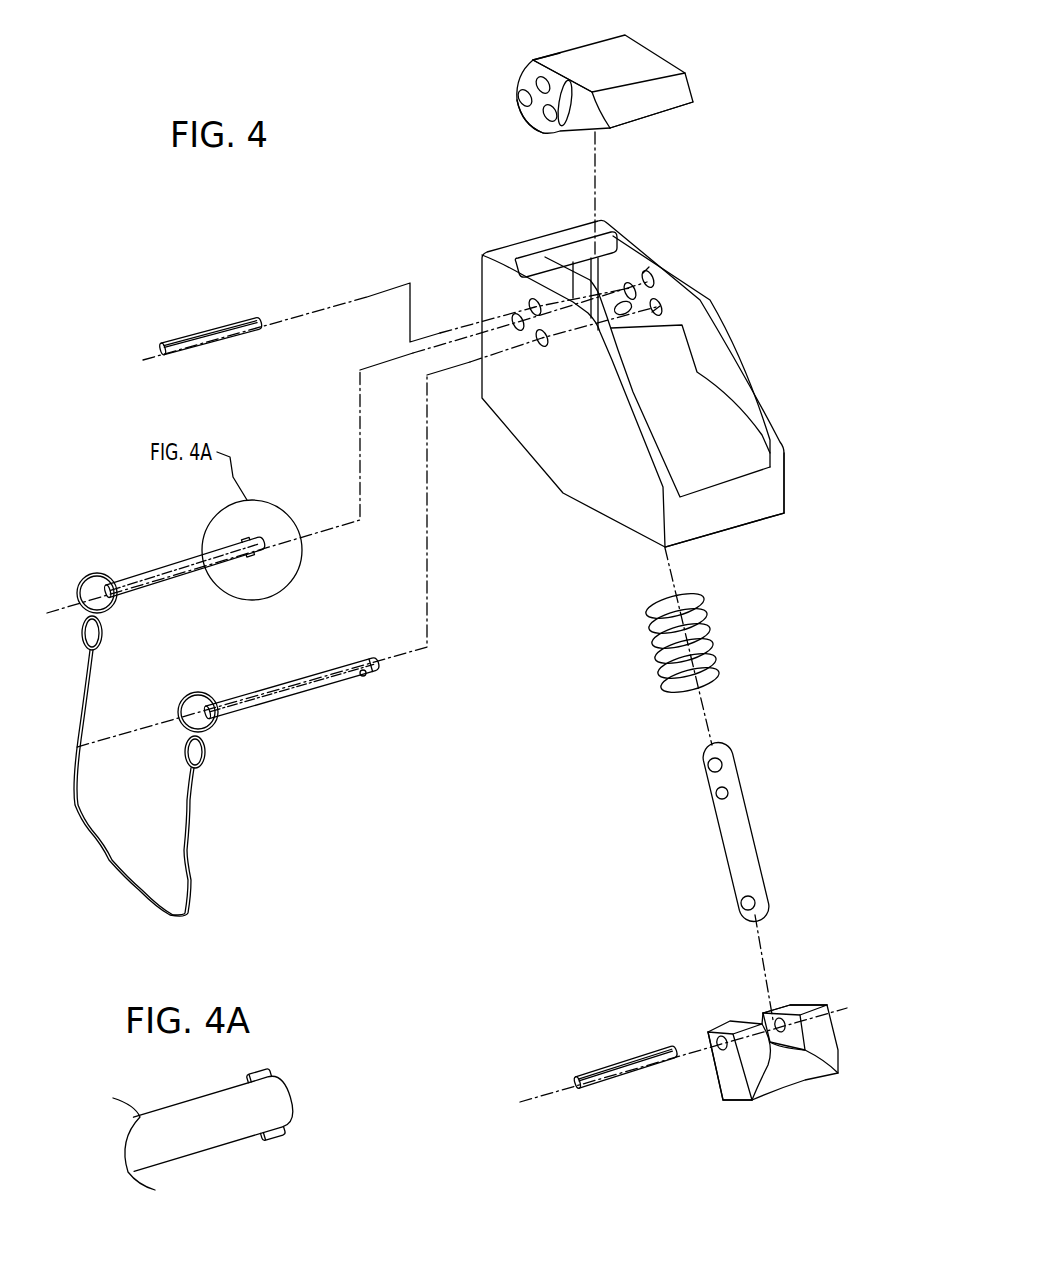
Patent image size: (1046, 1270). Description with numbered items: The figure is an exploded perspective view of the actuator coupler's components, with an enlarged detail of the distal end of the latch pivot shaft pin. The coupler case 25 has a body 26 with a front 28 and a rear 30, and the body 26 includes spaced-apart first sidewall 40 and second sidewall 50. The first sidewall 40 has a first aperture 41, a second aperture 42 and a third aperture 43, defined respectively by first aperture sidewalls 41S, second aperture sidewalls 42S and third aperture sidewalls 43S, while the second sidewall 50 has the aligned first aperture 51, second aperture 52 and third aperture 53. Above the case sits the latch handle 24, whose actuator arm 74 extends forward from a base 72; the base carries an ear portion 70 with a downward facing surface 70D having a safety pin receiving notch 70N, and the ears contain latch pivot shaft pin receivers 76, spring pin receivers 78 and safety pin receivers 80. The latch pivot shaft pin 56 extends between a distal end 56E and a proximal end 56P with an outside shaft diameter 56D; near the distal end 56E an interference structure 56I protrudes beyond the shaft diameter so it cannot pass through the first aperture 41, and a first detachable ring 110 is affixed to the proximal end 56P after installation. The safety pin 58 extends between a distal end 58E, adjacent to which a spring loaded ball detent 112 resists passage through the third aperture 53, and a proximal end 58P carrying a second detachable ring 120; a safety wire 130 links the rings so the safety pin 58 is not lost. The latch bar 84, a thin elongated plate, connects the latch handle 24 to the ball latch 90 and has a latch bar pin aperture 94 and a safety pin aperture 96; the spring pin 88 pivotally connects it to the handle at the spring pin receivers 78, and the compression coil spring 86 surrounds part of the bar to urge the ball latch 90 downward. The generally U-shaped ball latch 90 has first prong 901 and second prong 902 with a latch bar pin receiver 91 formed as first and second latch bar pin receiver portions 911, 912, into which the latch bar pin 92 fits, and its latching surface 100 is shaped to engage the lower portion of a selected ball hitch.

In FIG. 4, the latch handle 24 is at (660, 60).
In FIG. 4, the actuator arm 74 is at (680, 106).
In FIG. 4, the base 72 is at (533, 65).
In FIG. 4, the latch pivot shaft pin receivers 76 is at (519, 93).
In FIG. 4, the spring pin receivers 78 is at (546, 70).
In FIG. 4, the safety pin receivers 80 is at (560, 110).
In FIG. 4, the ear portion 70 is at (567, 128).
In FIG. 4, the safety pin receiving notch 70N is at (537, 120).
In FIG. 4, the downward facing surface 70D is at (577, 132).
In FIG. 4, the rear 30 is at (477, 283).
In FIG. 4, the first sidewall 40 is at (753, 380).
In FIG. 4, the body 26 is at (747, 438).
In FIG. 4, the second sidewall 50 is at (630, 413).
In FIG. 4, the coupler case 25 is at (787, 483).
In FIG. 4, the front 28 is at (730, 530).
In FIG. 4, the first aperture 51 is at (510, 318).
In FIG. 4, the second aperture 52 is at (530, 302).
In FIG. 4, the third aperture 53 is at (547, 345).
In FIG. 4, the first aperture 41 is at (628, 281).
In FIG. 4, the second aperture 42 is at (654, 277).
In FIG. 4, the third aperture 43 is at (662, 300).
In FIG. 4, the first aperture sidewalls 41S is at (612, 296).
In FIG. 4, the second aperture sidewalls 42S is at (647, 270).
In FIG. 4, the third aperture sidewalls 43S is at (661, 309).
In FIG. 4, the spring pin 88 is at (220, 330).
In FIG. 4, the latch pivot shaft pin 56 is at (150, 587).
In FIG. 4A, the latch pivot shaft pin 56 is at (197, 1143).
In FIG. 4, the distal end 56E is at (263, 540).
In FIG. 4A, the distal end 56E is at (295, 1093).
In FIG. 4, the interference structure 56I is at (270, 565).
In FIG. 4A, the interference structure 56I is at (282, 1070).
In FIG. 4, the outside shaft diameter 56D is at (190, 627).
In FIG. 4, the proximal end 56P is at (82, 583).
In FIG. 4, the first detachable ring 110 is at (95, 573).
In FIG. 4, the safety pin 58 is at (272, 703).
In FIG. 4, the distal end 58E is at (380, 670).
In FIG. 4, the proximal end 58P is at (188, 698).
In FIG. 4, the spring loaded ball detent 112 is at (363, 680).
In FIG. 4, the second detachable ring 120 is at (208, 692).
In FIG. 4, the safety wire 130 is at (74, 797).
In FIG. 4, the spring 86 is at (713, 647).
In FIG. 4, the latch bar 84 is at (753, 845).
In FIG. 4, the latch bar pin 92 is at (707, 766).
In FIG. 4, the safety pin aperture 96 is at (715, 795).
In FIG. 4, the latch bar pin aperture 94 is at (740, 903).
In FIG. 4, the ball latch 90 is at (840, 1053).
In FIG. 4, the first prong 901 is at (730, 1077).
In FIG. 4, the second prong 902 is at (783, 1013).
In FIG. 4, the latch bar pin receiver 91 is at (897, 940).
In FIG. 4, the first latch bar pin receiver portion 911 is at (765, 1020).
In FIG. 4, the second latch bar pin receiver portion 912 is at (803, 1020).
In FIG. 4, the latching surface 100 is at (802, 1067).